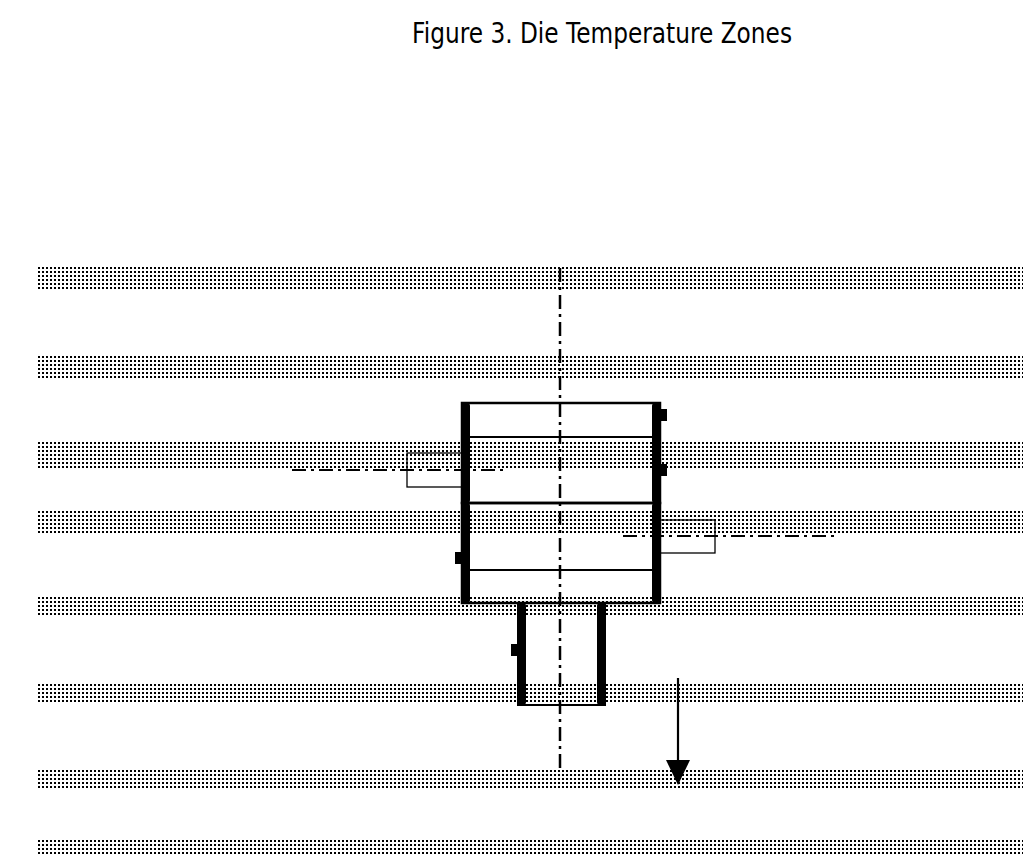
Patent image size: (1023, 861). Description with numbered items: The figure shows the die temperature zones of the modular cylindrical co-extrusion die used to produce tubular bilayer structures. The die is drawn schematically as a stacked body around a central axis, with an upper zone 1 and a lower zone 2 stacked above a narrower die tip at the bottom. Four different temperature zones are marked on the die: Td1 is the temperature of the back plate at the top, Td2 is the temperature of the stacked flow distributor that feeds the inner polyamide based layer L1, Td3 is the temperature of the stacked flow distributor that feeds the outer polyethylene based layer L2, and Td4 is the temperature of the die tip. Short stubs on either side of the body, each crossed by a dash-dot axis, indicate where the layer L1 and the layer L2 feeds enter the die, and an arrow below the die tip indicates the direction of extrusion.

The die zone 1 is at (561, 454).
The die zone 2 is at (561, 553).
The temperature of the back plate Td1 is at (664, 415).
The temperature of stacked flow distributor SFD1 Td2 is at (664, 470).
The temperature of stacked flow distributor SFD2 Td3 is at (458, 558).
The temperature of the die tip Td4 is at (514, 650).
The inner polyamide based layer L1 is at (399, 436).
The outer polyethylene based layer L2 is at (730, 553).